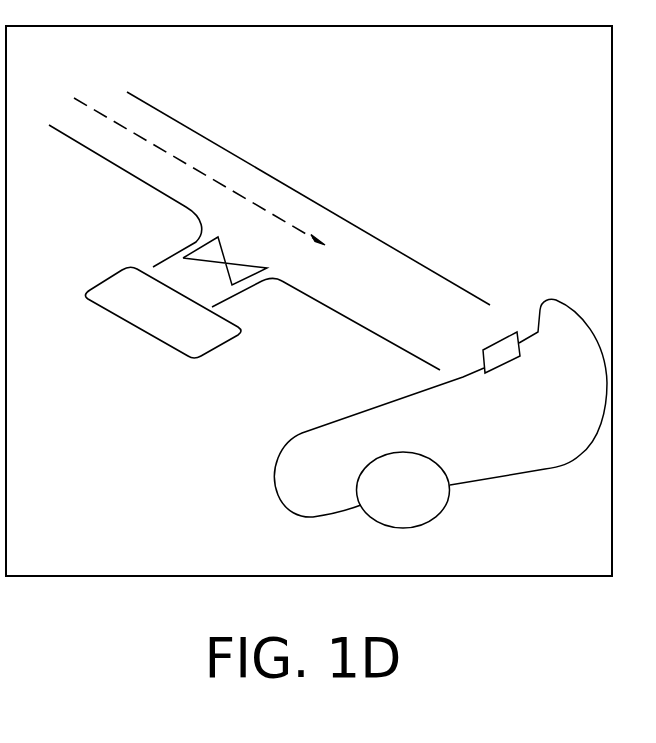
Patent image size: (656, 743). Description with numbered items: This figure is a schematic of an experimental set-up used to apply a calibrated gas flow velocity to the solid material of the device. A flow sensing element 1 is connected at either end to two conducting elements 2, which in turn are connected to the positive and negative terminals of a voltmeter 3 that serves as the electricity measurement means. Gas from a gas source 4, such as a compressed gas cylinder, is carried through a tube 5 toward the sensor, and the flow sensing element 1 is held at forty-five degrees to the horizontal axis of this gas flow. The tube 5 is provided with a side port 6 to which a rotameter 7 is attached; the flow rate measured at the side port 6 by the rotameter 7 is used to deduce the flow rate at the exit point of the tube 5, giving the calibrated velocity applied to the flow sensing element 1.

The flow sensing element 1 is at (515, 334).
The conducting elements 2 is at (387, 407).
The voltmeter 3 is at (447, 517).
The gas source 4 is at (74, 97).
The tube 5 is at (274, 175).
The side port 6 is at (224, 244).
The rotameter 7 is at (143, 328).